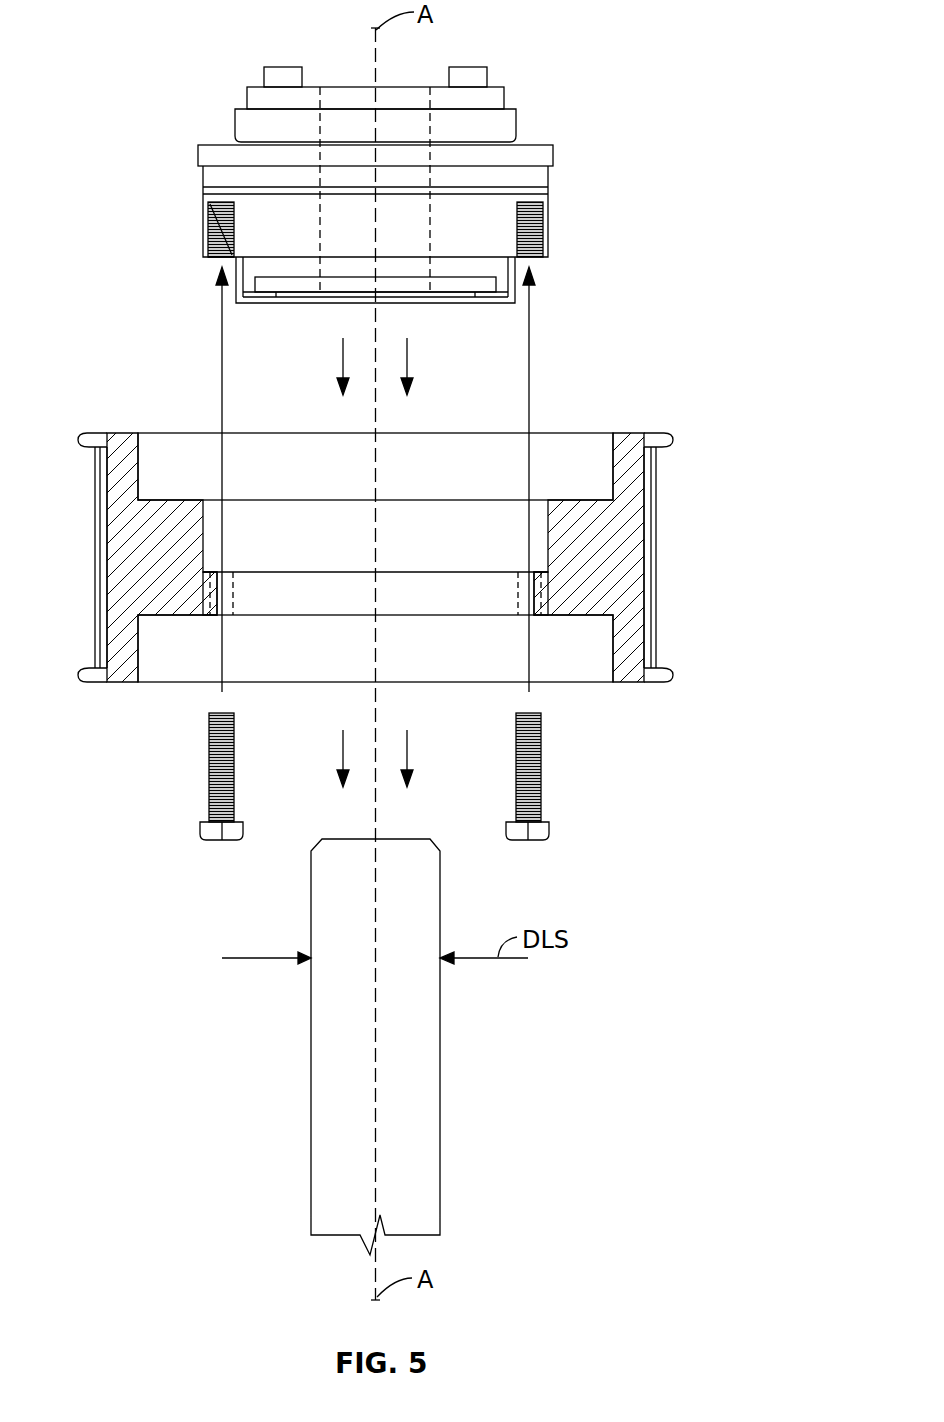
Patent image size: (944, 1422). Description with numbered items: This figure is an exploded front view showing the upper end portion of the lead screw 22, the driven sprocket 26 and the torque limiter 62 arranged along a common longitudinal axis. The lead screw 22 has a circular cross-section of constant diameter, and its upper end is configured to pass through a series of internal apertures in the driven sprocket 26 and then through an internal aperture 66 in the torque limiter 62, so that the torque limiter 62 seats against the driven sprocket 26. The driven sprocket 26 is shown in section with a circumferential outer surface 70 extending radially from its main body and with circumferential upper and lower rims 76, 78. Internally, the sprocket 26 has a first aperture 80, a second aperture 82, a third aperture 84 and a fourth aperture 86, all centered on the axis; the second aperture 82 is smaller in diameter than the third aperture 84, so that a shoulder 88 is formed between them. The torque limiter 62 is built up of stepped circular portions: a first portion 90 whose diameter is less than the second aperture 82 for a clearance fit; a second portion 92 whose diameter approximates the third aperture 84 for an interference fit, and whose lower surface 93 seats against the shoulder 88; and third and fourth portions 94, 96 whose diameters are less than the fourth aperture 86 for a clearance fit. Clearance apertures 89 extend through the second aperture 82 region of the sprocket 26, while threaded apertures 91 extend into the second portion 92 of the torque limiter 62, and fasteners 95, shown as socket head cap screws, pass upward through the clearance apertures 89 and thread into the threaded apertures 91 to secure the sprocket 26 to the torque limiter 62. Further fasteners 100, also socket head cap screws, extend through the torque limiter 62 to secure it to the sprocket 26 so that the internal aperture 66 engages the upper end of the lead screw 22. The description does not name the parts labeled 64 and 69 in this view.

The fasteners 100 is at (282, 67).
The cover plate 64 is at (503, 97).
The fourth portion 96 is at (228, 87).
The third portion 94 is at (185, 195).
The torque limiter 62 is at (548, 225).
The second portion 92 is at (208, 225).
The threaded apertures 91 is at (234, 240).
The lower surface 93 is at (215, 258).
The first portion 90 is at (236, 290).
The internal aperture 66 is at (431, 278).
The fourth aperture 86 is at (157, 447).
The first aperture 80 is at (172, 663).
The third aperture 84 is at (217, 545).
The second aperture 82 is at (210, 590).
The clearance apertures 89 is at (233, 578).
The shoulder 88 is at (533, 583).
The circumferential outer surface 70 is at (655, 503).
The housing wall 69 is at (605, 530).
The driven sprocket 26 is at (655, 640).
The upper rim 76 is at (662, 437).
The lower rim 78 is at (663, 682).
The fasteners 95 is at (208, 787).
The lead screw 22 is at (440, 1162).